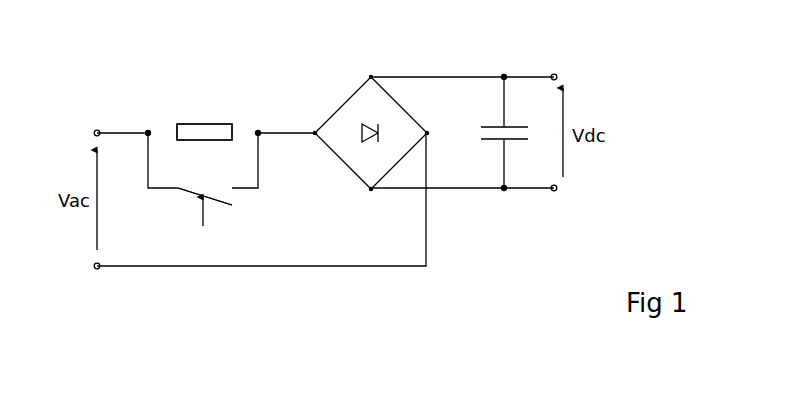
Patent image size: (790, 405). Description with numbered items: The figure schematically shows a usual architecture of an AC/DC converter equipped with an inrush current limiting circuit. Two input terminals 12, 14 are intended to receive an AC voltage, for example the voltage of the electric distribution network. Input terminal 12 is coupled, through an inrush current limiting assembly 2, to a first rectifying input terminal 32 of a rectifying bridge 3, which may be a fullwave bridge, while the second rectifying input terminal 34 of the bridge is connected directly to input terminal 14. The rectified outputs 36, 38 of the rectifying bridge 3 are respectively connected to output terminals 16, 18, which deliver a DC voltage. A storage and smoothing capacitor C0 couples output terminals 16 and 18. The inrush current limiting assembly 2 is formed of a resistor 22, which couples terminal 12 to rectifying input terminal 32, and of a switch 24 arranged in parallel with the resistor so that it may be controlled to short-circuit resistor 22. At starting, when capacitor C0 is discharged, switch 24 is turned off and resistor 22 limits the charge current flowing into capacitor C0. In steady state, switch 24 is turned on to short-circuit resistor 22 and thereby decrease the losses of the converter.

The inrush current limiting assembly 2 is at (200, 86).
The rectifying bridge 3 is at (343, 102).
The input terminal 12 is at (97, 127).
The input terminal 14 is at (95, 266).
The output terminal 16 is at (557, 77).
The output terminal 18 is at (557, 189).
The resistor 22 is at (207, 124).
The switch 24 is at (196, 197).
The first rectifying input terminal 32 is at (315, 133).
The second rectifying input terminal 34 is at (428, 133).
The rectified output 36 is at (371, 77).
The rectified output 38 is at (371, 190).
The storage and smoothing capacitor C0 is at (501, 132).